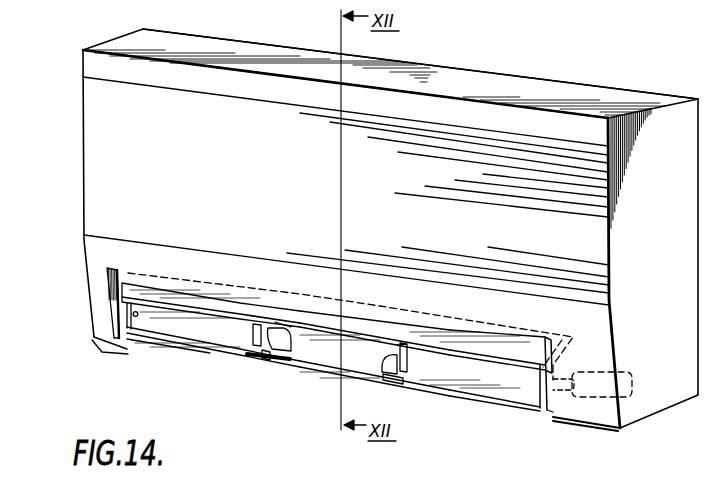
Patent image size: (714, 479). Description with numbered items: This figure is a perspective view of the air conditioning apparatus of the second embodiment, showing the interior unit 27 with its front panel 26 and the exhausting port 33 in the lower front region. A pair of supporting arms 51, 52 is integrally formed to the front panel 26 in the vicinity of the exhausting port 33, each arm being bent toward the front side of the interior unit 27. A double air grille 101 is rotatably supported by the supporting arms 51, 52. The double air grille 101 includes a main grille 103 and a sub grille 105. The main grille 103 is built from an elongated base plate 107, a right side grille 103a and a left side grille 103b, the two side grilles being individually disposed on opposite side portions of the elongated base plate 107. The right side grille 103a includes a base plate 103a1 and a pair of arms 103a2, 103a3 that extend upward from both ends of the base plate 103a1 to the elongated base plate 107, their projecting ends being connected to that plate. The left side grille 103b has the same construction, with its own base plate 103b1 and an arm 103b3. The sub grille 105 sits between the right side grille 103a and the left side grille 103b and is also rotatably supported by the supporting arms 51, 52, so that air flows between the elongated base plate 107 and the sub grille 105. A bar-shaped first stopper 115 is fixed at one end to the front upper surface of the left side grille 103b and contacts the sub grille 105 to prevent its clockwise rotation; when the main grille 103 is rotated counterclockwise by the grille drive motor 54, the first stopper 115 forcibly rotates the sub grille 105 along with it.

The front panel 26 is at (598, 249).
The interior unit 27 is at (483, 75).
The grille drive motor 54 is at (622, 384).
The elongated base plate 107 is at (137, 288).
The double air grille 101 is at (316, 374).
The main grille 103 is at (316, 374).
The left side grille 103b is at (180, 354).
The base plate of left side grille 103b1 is at (197, 340).
The arm of left side grille 103b3 is at (253, 358).
The first stopper 115 is at (267, 363).
The supporting arm 51 is at (277, 331).
The sub grille 105 is at (331, 362).
The supporting arm 52 is at (413, 347).
The exhausting port 33 is at (388, 376).
The right side grille 103a is at (500, 402).
The base plate 103a1 is at (491, 398).
The arm 103a2 is at (412, 362).
The arm 103a3 is at (568, 398).